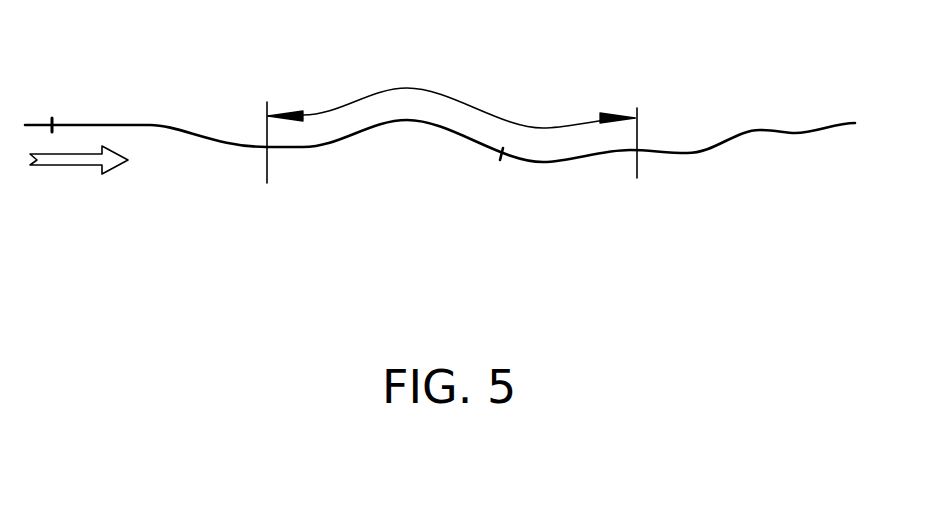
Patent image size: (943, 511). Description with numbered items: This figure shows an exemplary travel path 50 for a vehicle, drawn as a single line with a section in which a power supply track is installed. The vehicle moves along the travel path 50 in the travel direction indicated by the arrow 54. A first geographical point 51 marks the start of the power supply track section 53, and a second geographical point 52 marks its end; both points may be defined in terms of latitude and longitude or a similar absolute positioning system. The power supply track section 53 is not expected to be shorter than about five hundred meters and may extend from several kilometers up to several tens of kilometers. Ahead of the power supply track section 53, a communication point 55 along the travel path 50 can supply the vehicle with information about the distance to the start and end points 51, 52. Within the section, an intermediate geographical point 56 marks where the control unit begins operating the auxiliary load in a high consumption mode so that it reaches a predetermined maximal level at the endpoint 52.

The travel path 50 is at (150, 125).
The first geographical point 51 is at (250, 163).
The second geographical point 52 is at (620, 165).
The power supply track section 53 is at (433, 92).
The arrow 54 is at (62, 167).
The communication point 55 is at (52, 121).
The intermediate geographical point 56 is at (496, 157).